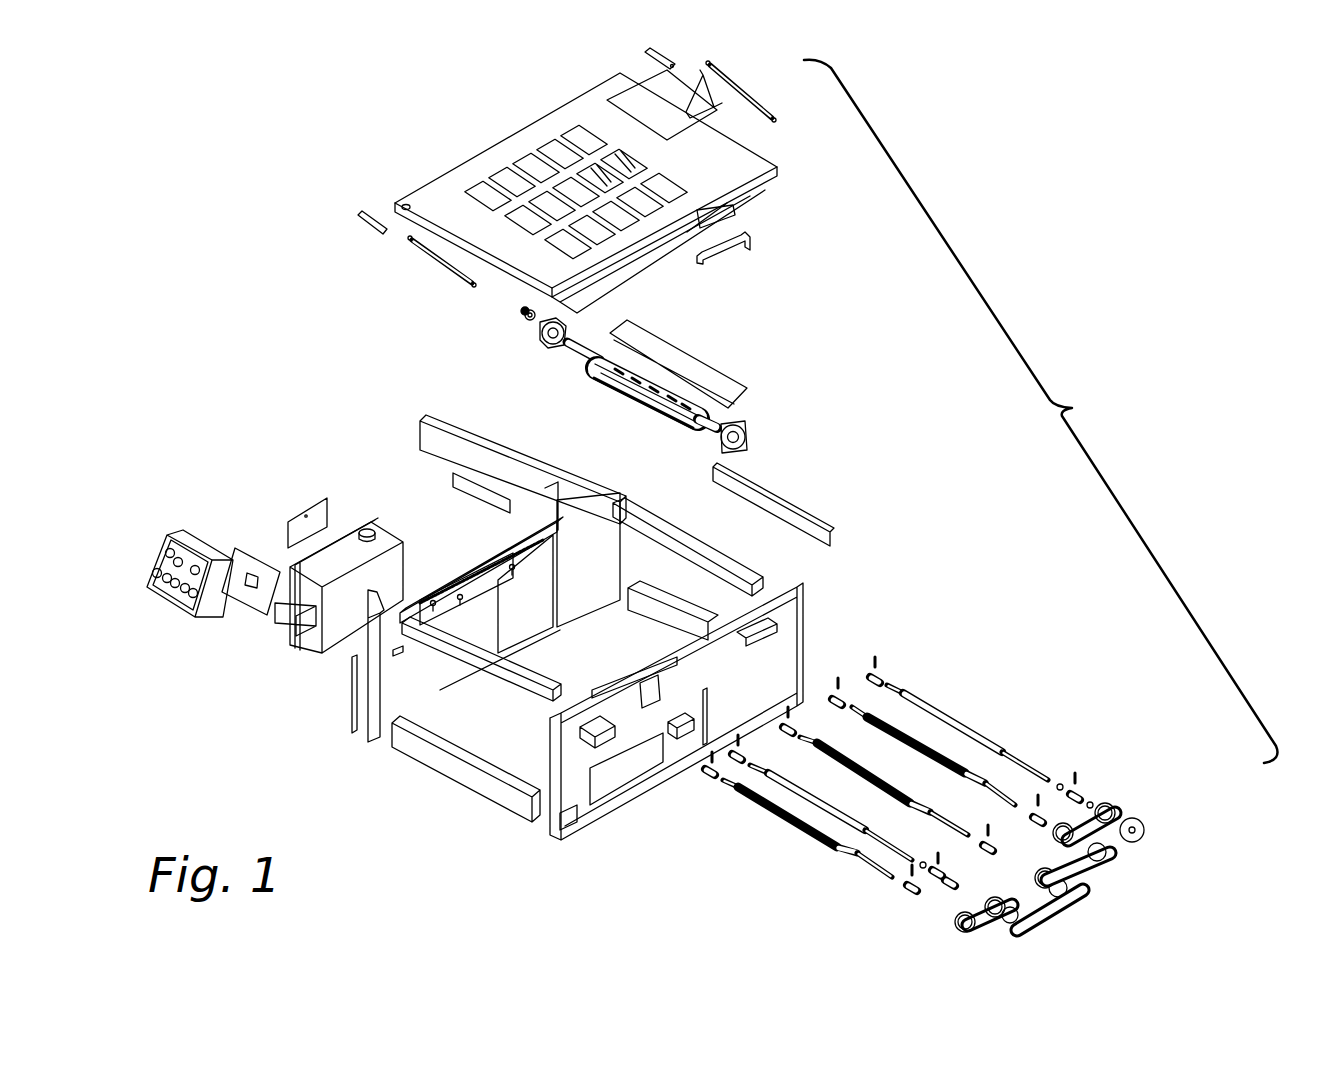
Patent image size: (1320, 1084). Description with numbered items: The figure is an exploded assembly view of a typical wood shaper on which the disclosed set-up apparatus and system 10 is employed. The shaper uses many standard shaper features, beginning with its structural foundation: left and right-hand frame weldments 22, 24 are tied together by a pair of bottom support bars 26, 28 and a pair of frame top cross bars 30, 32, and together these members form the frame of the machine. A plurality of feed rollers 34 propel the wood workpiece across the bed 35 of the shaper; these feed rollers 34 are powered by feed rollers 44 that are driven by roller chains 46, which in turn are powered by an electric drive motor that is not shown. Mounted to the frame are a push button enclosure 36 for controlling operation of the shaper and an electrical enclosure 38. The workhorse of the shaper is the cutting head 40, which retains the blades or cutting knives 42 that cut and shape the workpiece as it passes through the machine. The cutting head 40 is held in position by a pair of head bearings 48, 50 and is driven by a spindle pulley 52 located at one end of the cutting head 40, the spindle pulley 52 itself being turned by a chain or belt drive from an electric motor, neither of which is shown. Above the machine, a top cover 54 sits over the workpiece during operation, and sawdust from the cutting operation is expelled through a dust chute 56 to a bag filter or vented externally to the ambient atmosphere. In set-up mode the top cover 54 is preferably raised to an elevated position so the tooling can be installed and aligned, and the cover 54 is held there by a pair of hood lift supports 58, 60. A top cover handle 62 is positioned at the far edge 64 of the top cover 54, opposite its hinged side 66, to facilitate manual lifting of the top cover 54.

The apparatus and system 10 is at (1041, 411).
The left-hand frame weldment 22 is at (368, 735).
The right-hand frame weldment 24 is at (552, 843).
The bottom support bar 26 is at (442, 777).
The bottom support bar 28 is at (673, 600).
The frame top cross bar 30 is at (470, 667).
The frame top cross bar 32 is at (697, 547).
The feed rollers 34 is at (783, 820).
The bed 35 is at (495, 745).
The push button enclosure 36 is at (167, 600).
The electrical enclosure 38 is at (387, 527).
The cutting head 40 is at (613, 387).
The cutting knives 42 is at (663, 417).
The feed rollers (drive) 44 is at (962, 922).
The roller chains 46 is at (1053, 915).
The head bearing 48 is at (547, 347).
The head bearing 50 is at (750, 433).
The spindle pulley 52 is at (516, 313).
The top cover 54 is at (750, 168).
The dust chute 56 is at (690, 68).
The hood lift support 58 is at (427, 257).
The hood lift support 60 is at (772, 104).
The top cover handle 62 is at (727, 262).
The far edge 64 is at (747, 197).
The hinged side 66 is at (500, 138).